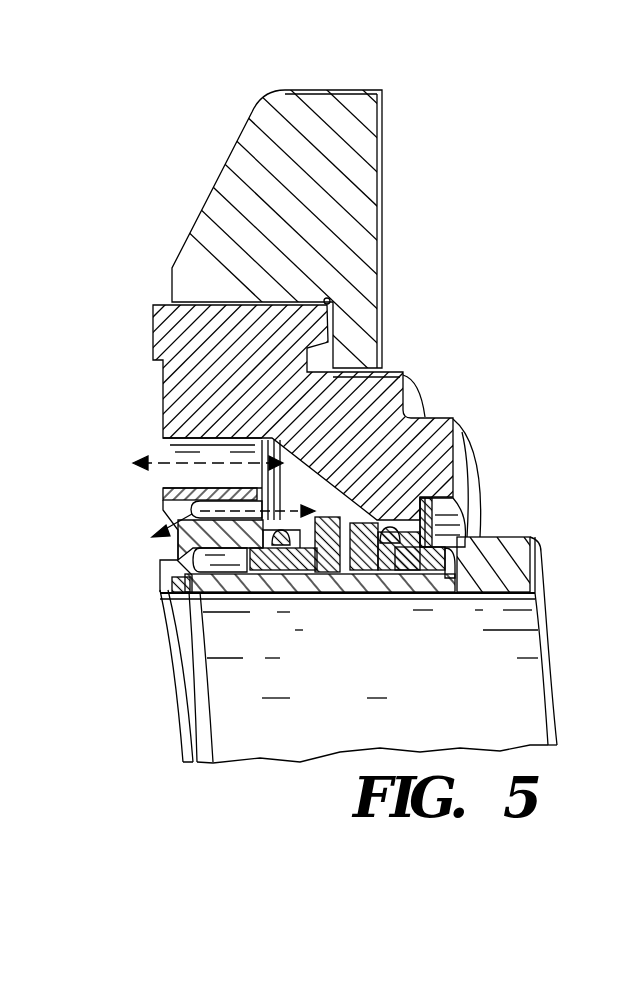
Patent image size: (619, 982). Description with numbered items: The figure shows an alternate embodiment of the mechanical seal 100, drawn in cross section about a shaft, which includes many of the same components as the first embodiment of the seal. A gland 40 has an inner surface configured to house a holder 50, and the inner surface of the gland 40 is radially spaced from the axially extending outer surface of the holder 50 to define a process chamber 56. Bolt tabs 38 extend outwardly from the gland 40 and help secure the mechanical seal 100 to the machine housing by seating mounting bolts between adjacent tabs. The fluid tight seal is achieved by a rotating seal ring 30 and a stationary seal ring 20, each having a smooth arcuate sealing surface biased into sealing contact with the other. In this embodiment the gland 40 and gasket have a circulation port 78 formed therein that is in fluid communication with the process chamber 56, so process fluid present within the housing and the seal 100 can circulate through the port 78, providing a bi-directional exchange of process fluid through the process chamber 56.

The mechanical seal 100 is at (461, 318).
The bolt tabs 38 is at (382, 310).
The gland 40 is at (445, 419).
The circulation port 78 is at (173, 478).
The process chamber 56 is at (168, 533).
The holder 50 is at (160, 573).
The rotating seal ring 30 is at (310, 580).
The stationary seal ring 20 is at (380, 578).